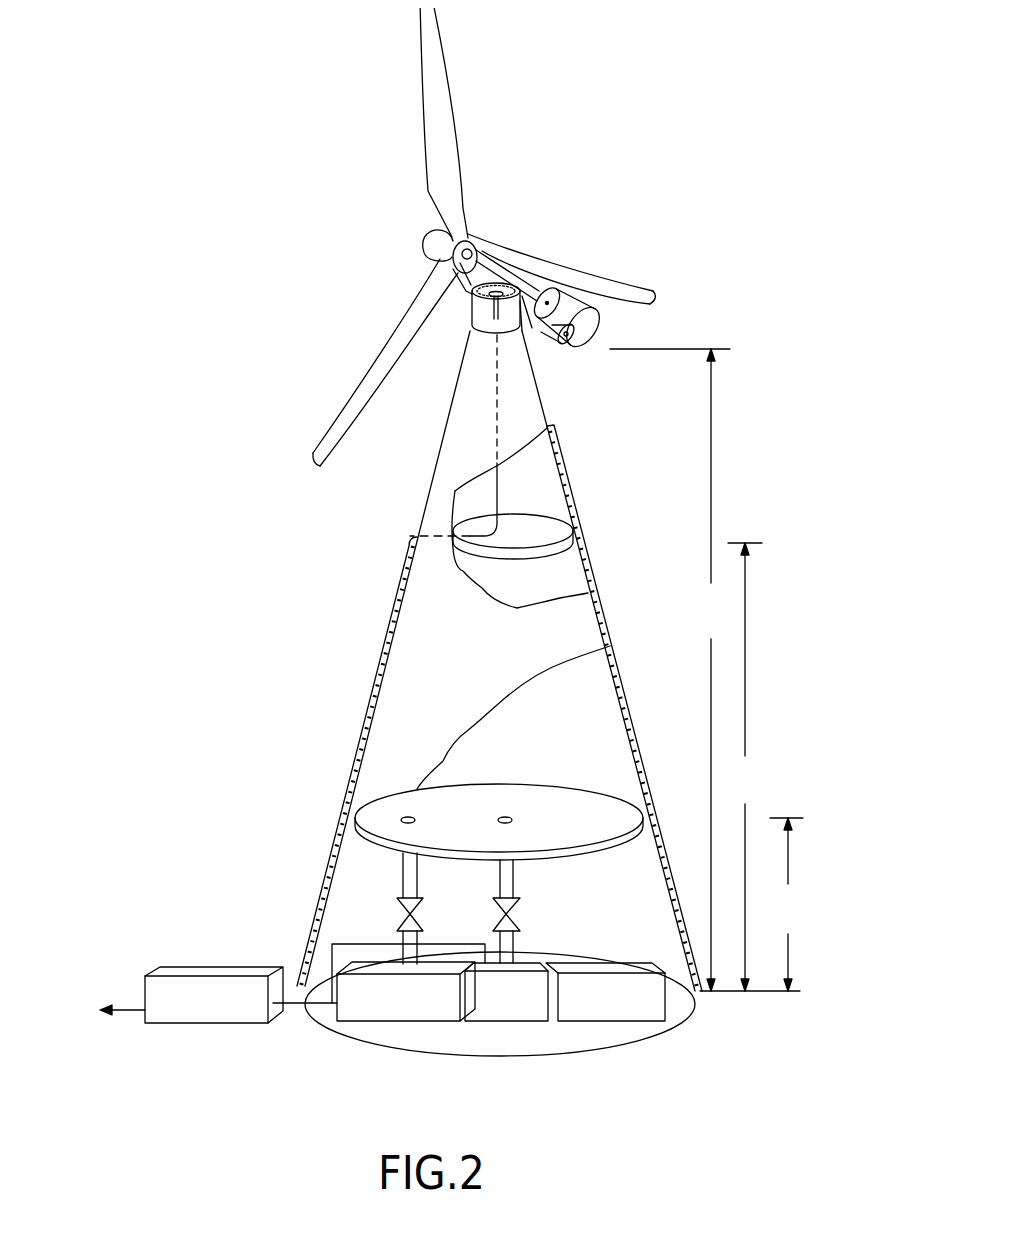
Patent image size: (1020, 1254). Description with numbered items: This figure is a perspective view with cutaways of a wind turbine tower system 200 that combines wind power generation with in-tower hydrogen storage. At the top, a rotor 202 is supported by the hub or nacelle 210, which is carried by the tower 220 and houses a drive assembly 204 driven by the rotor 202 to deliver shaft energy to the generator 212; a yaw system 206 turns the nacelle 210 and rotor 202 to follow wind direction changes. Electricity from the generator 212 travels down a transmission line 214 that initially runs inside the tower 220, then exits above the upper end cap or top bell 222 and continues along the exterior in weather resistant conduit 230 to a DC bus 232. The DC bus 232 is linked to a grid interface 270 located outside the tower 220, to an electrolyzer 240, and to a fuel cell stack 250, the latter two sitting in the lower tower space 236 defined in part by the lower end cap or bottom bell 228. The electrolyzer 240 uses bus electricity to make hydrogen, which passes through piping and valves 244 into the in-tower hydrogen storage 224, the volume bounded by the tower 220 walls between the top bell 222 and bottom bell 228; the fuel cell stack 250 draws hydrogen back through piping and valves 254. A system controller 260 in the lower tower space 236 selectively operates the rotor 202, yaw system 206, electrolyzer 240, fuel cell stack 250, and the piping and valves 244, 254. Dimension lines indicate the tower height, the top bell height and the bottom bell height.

The wind turbine tower system 200 is at (312, 321).
The rotor 202 is at (453, 117).
The drive assembly 204 is at (486, 228).
The yaw system 206 is at (453, 322).
The nacelle 210 is at (600, 329).
The generator 212 is at (577, 350).
The transmission line 214 is at (497, 418).
The tower 220 is at (428, 496).
The top bell 222 is at (548, 517).
The in-tower hydrogen storage 224 is at (572, 565).
The bottom bell 228 is at (602, 793).
The weather resistant conduit 230 is at (382, 657).
The DC bus 232 is at (313, 1002).
The lower tower space 236 is at (660, 952).
The electrolyzer 240 is at (397, 1020).
The piping and valves 244 is at (403, 852).
The fuel cell stack 250 is at (510, 1020).
The piping and valves 254 is at (519, 900).
The system controller 260 is at (613, 1020).
The grid interface 270 is at (220, 1022).